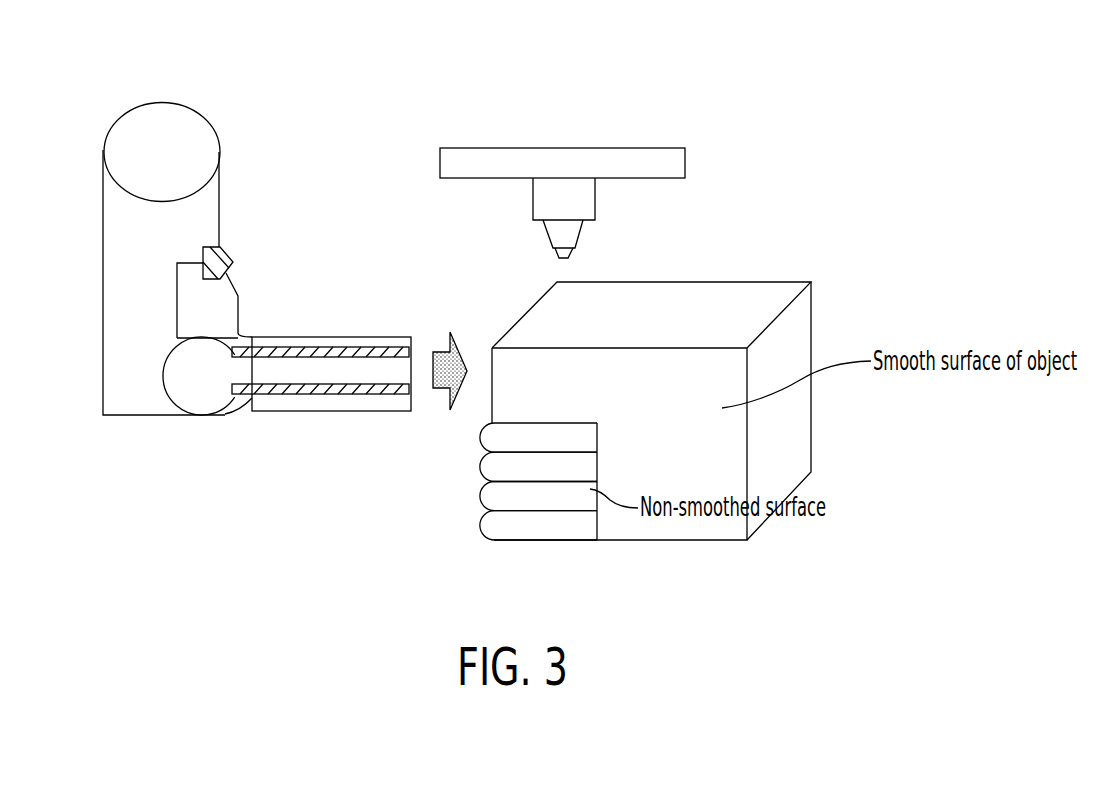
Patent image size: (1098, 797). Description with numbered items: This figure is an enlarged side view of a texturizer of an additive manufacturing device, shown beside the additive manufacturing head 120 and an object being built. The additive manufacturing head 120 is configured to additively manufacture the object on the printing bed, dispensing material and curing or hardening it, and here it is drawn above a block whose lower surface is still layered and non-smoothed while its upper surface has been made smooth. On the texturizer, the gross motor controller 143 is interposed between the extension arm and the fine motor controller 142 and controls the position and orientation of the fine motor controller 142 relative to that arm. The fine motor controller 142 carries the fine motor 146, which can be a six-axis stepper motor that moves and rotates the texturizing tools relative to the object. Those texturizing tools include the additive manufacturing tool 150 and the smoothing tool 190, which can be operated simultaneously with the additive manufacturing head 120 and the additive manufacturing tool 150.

The additive manufacturing head 120 is at (604, 123).
The fine motor controller 142 is at (103, 307).
The gross motor controller 143 is at (103, 148).
The fine motor 146 is at (168, 350).
The additive manufacturing tool 150 is at (293, 347).
The smoothing tool 190 is at (322, 412).